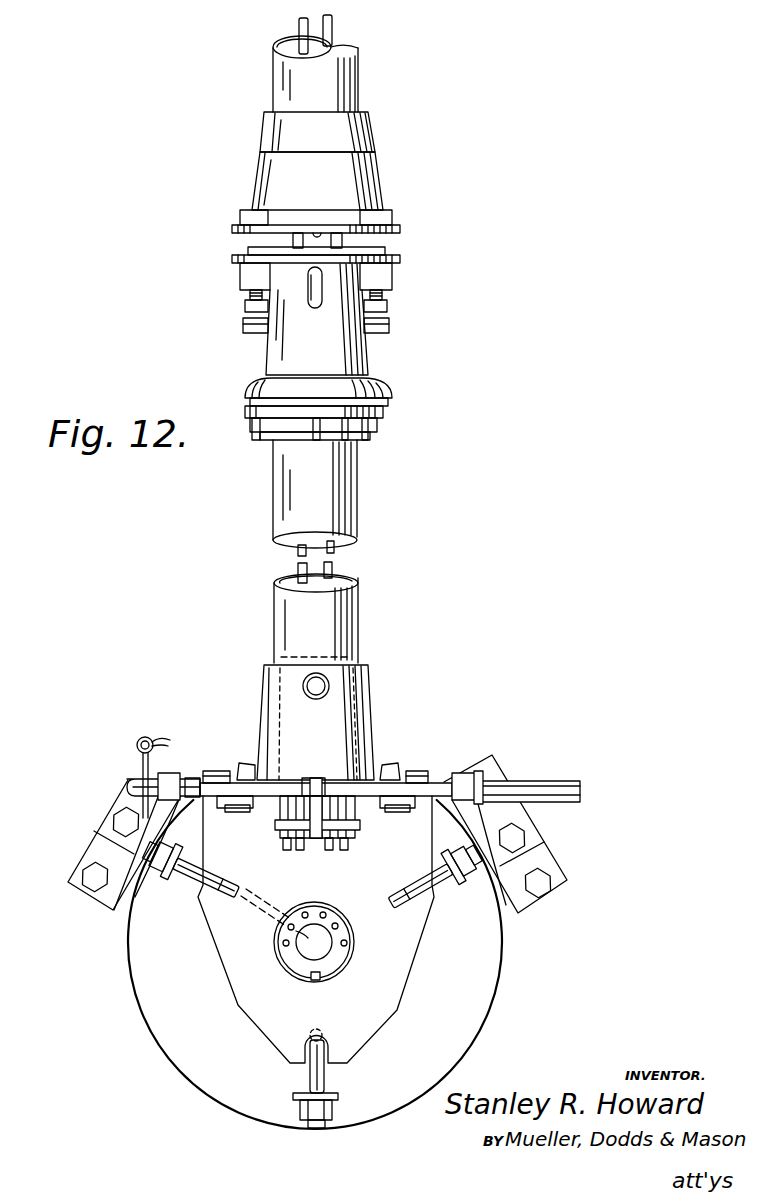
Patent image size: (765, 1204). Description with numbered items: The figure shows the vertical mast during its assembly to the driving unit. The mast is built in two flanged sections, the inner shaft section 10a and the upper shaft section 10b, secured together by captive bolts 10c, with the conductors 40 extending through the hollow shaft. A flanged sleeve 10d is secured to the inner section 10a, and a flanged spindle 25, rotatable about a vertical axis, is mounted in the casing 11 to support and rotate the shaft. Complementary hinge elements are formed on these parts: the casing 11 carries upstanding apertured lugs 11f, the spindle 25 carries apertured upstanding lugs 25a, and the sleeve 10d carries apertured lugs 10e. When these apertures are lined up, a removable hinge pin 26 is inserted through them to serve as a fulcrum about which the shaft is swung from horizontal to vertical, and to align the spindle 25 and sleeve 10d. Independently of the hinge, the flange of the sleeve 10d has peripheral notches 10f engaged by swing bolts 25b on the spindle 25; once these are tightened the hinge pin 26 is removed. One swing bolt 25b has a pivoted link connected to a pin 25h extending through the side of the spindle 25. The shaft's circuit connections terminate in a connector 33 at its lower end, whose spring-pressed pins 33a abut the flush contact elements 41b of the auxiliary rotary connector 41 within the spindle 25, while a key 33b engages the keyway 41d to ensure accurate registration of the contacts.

The inner shaft section 10a is at (358, 506).
The upper shaft section 10b is at (360, 84).
The captive bolts 10c is at (243, 326).
The flanged sleeve 10d is at (265, 686).
The apertured lugs 10e is at (240, 765).
The notches 10f is at (316, 778).
The casing 11 is at (490, 961).
The upstanding apertured lugs 11f is at (172, 797).
The flanged spindle 25 is at (365, 1030).
The apertured upstanding lugs 25a is at (220, 769).
The swing bolts 25b is at (200, 886).
The pin 25h is at (275, 892).
The removable hinge pin 26 is at (558, 783).
The connector 33 is at (308, 841).
The pins 33a is at (330, 848).
The key 33b is at (312, 808).
The conductors 40 is at (333, 36).
The auxiliary rotary connector 41 is at (287, 958).
The contact elements 41b is at (346, 922).
The keyway 41d is at (322, 980).